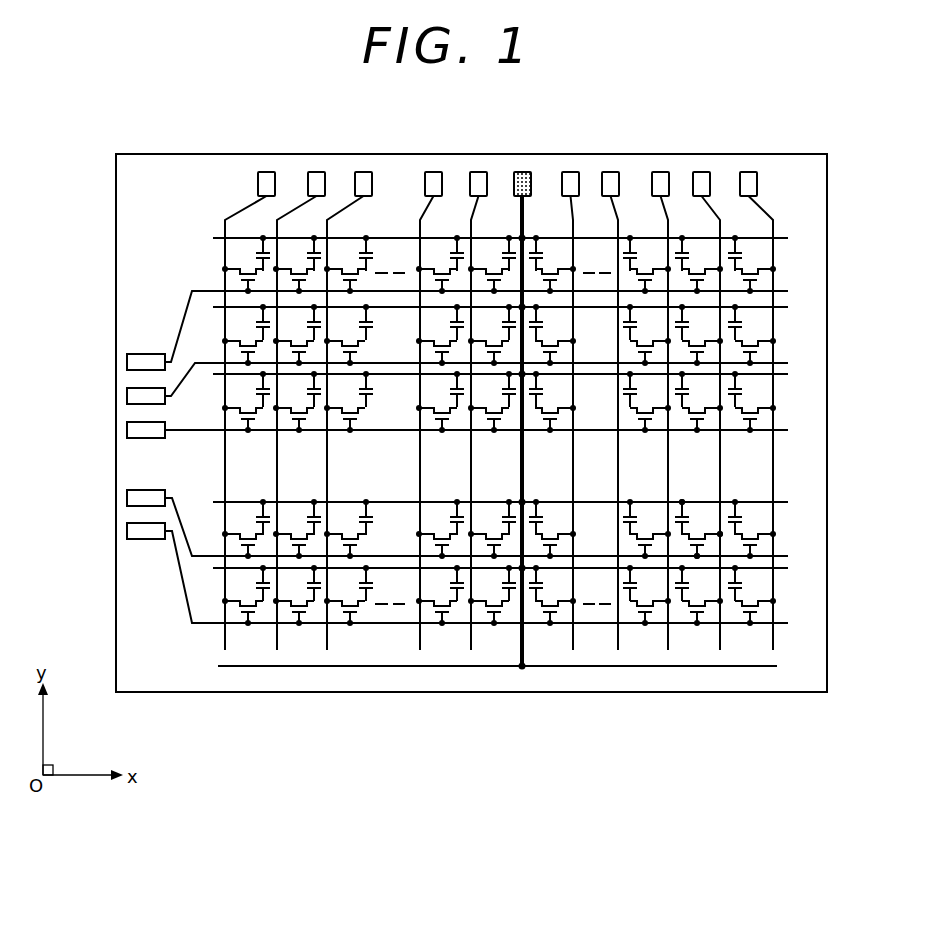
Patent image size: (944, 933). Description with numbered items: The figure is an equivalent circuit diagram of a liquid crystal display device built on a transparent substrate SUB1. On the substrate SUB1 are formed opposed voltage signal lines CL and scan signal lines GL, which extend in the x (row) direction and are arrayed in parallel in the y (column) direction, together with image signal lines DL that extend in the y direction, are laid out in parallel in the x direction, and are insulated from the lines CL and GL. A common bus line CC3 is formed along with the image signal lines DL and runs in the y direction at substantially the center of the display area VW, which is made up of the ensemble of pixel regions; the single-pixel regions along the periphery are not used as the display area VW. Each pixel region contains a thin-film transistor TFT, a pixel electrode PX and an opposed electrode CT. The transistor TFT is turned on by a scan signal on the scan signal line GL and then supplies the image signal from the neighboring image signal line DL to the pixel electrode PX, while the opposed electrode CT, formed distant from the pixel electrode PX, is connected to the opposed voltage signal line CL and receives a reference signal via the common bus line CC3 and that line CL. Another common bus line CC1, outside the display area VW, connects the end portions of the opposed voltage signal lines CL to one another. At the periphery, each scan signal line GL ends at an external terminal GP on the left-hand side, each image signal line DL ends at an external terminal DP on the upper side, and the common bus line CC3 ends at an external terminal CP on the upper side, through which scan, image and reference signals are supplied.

The transparent substrate SUB1 is at (272, 153).
The external terminal DP is at (609, 172).
The external terminal CP is at (532, 190).
The common bus line CC3 is at (519, 216).
The common bus line CC1 is at (233, 666).
The external terminal GP is at (143, 355).
The scan signal line GL is at (423, 720).
The opposed voltage signal line CL is at (607, 718).
The image signal line DL is at (277, 650).
The opposed electrode CT is at (694, 518).
The thin-film transistor TFT is at (705, 541).
The pixel electrode PX is at (690, 526).
The display area VW is at (398, 456).